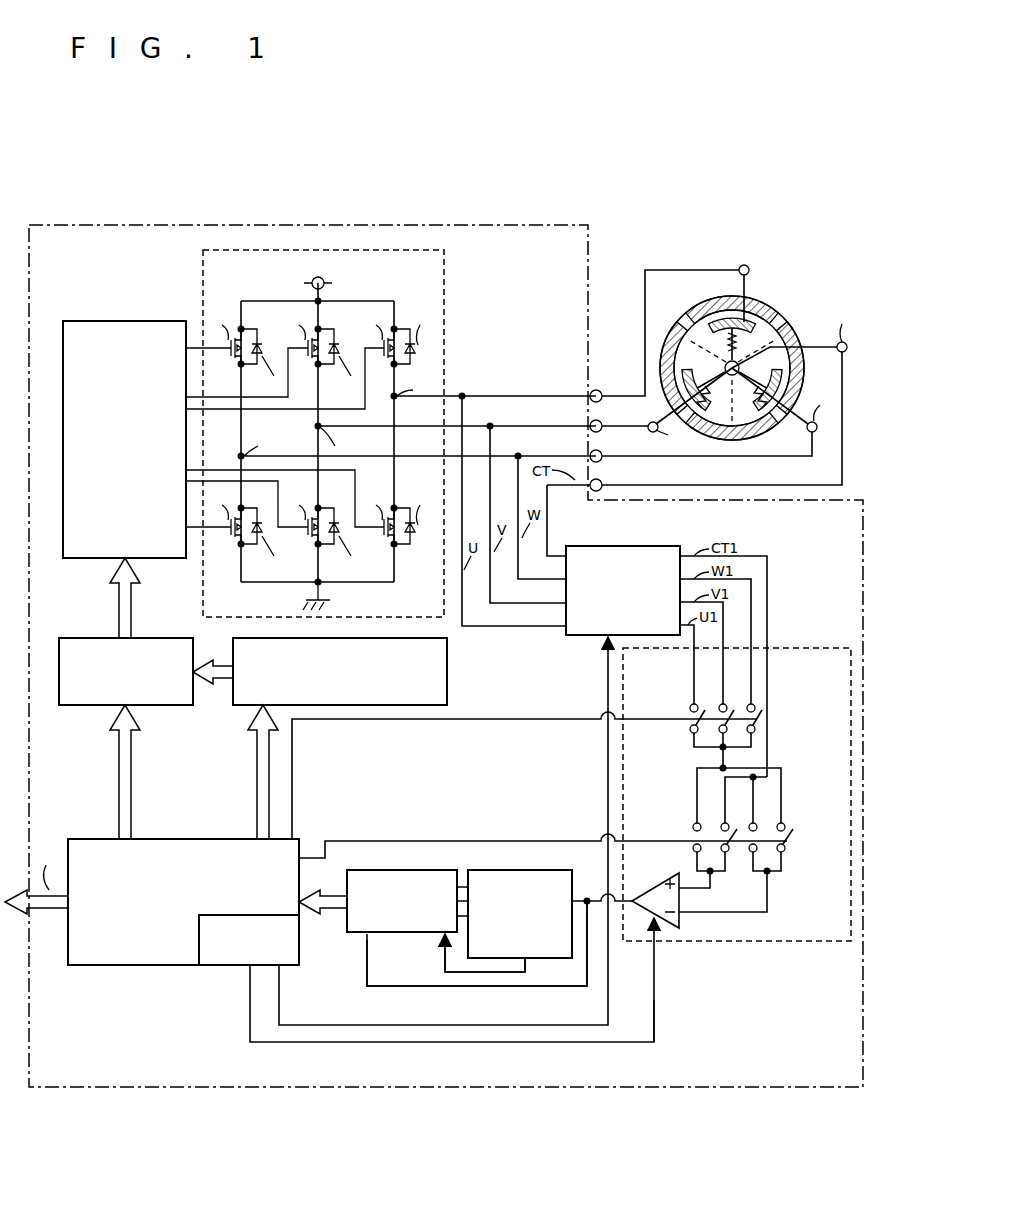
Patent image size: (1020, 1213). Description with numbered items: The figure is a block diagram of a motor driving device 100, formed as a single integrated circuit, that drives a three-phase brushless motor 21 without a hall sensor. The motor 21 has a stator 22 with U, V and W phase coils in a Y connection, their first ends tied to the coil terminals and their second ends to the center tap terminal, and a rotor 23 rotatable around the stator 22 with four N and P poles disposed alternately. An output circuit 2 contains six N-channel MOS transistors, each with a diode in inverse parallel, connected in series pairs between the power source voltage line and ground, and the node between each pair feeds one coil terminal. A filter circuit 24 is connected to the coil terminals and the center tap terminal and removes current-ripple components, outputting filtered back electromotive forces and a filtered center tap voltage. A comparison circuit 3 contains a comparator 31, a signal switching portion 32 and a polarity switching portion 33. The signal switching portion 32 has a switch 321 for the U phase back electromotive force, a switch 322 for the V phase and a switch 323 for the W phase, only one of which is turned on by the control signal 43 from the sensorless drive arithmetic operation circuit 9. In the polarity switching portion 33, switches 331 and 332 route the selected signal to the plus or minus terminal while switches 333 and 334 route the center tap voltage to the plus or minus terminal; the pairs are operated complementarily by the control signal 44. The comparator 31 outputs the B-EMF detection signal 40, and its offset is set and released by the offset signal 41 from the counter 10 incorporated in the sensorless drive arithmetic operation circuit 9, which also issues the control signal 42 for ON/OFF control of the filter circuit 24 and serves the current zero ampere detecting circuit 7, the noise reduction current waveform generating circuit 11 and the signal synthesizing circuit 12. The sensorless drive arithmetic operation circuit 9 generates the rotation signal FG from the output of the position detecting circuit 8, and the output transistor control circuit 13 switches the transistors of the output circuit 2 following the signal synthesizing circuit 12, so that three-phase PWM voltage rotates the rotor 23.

The motor driving device 100 is at (521, 222).
The output circuit 2 is at (444, 270).
The comparison circuit 3 is at (806, 646).
The current zero ampere detecting circuit 7 is at (513, 869).
The position detecting circuit 8 is at (398, 869).
The sensorless drive arithmetic operation circuit 9 is at (194, 838).
The counter 10 is at (199, 943).
The noise reduction current waveform generating circuit 11 is at (447, 667).
The signal synthesizing circuit 12 is at (162, 638).
The output transistor control circuit 13 is at (125, 320).
The three-phase brushless motor 21 is at (765, 304).
The stator 22 is at (764, 418).
The rotor 23 is at (789, 332).
The filter circuit 24 is at (620, 545).
The comparator 31 is at (659, 885).
The signal switching portion 32 is at (726, 714).
The polarity switching portion 33 is at (742, 815).
The B-EMF detection signal 40 is at (647, 930).
The offset signal 41 is at (414, 1043).
The control signal 42 is at (332, 1024).
The control signal 43 is at (498, 719).
The control signal 44 is at (498, 841).
The switch 321 is at (689, 708).
The switch 322 is at (718, 706).
The switch 323 is at (746, 706).
The switch 331 is at (692, 827).
The switch 332 is at (795, 838).
The switch 333 is at (720, 825).
The switch 334 is at (758, 826).